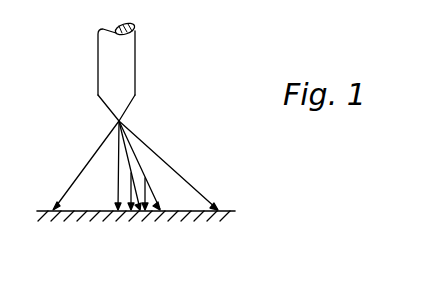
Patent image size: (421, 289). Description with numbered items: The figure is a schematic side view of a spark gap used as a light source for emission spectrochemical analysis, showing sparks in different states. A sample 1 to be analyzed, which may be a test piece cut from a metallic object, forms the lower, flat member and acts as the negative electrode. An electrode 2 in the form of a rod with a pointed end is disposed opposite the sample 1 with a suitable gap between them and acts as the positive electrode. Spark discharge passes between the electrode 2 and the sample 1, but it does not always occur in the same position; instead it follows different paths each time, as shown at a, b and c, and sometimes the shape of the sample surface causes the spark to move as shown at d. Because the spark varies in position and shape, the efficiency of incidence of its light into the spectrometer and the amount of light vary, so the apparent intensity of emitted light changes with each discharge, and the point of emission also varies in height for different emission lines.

The sample 1 is at (112, 214).
The electrode 2 is at (130, 62).
The spark path a is at (117, 163).
The spark path b is at (157, 153).
The spark path c is at (73, 182).
The moving spark d is at (151, 178).